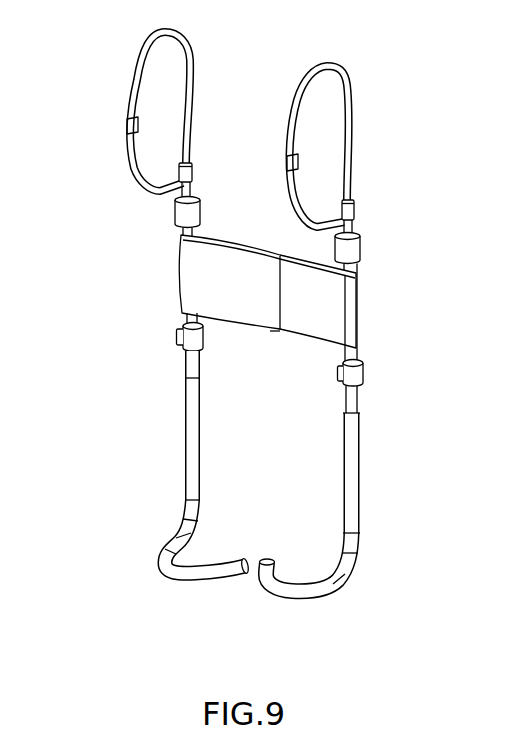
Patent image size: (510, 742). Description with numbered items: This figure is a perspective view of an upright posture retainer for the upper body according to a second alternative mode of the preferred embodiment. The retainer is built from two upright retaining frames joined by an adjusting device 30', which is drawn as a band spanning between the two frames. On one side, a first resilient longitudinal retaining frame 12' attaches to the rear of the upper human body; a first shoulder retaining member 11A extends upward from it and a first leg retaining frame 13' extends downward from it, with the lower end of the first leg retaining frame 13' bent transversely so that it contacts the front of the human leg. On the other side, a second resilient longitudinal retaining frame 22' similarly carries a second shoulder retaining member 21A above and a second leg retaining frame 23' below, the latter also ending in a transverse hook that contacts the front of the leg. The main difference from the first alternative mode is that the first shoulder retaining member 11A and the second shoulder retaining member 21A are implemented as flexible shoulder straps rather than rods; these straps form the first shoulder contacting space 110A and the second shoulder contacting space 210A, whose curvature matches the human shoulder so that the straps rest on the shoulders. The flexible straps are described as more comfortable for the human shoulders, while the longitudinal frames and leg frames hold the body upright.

The first shoulder retaining member 11A is at (112, 103).
The first shoulder contacting space 110A is at (155, 102).
The first resilient longitudinal retaining frame 12' is at (214, 199).
The second shoulder retaining member 21A is at (368, 140).
The second shoulder contacting space 210A is at (327, 150).
The second resilient longitudinal retaining frame 22' is at (384, 237).
The adjusting device 30' is at (224, 291).
The first leg retaining frame 13' is at (162, 456).
The second leg retaining frame 23' is at (340, 452).